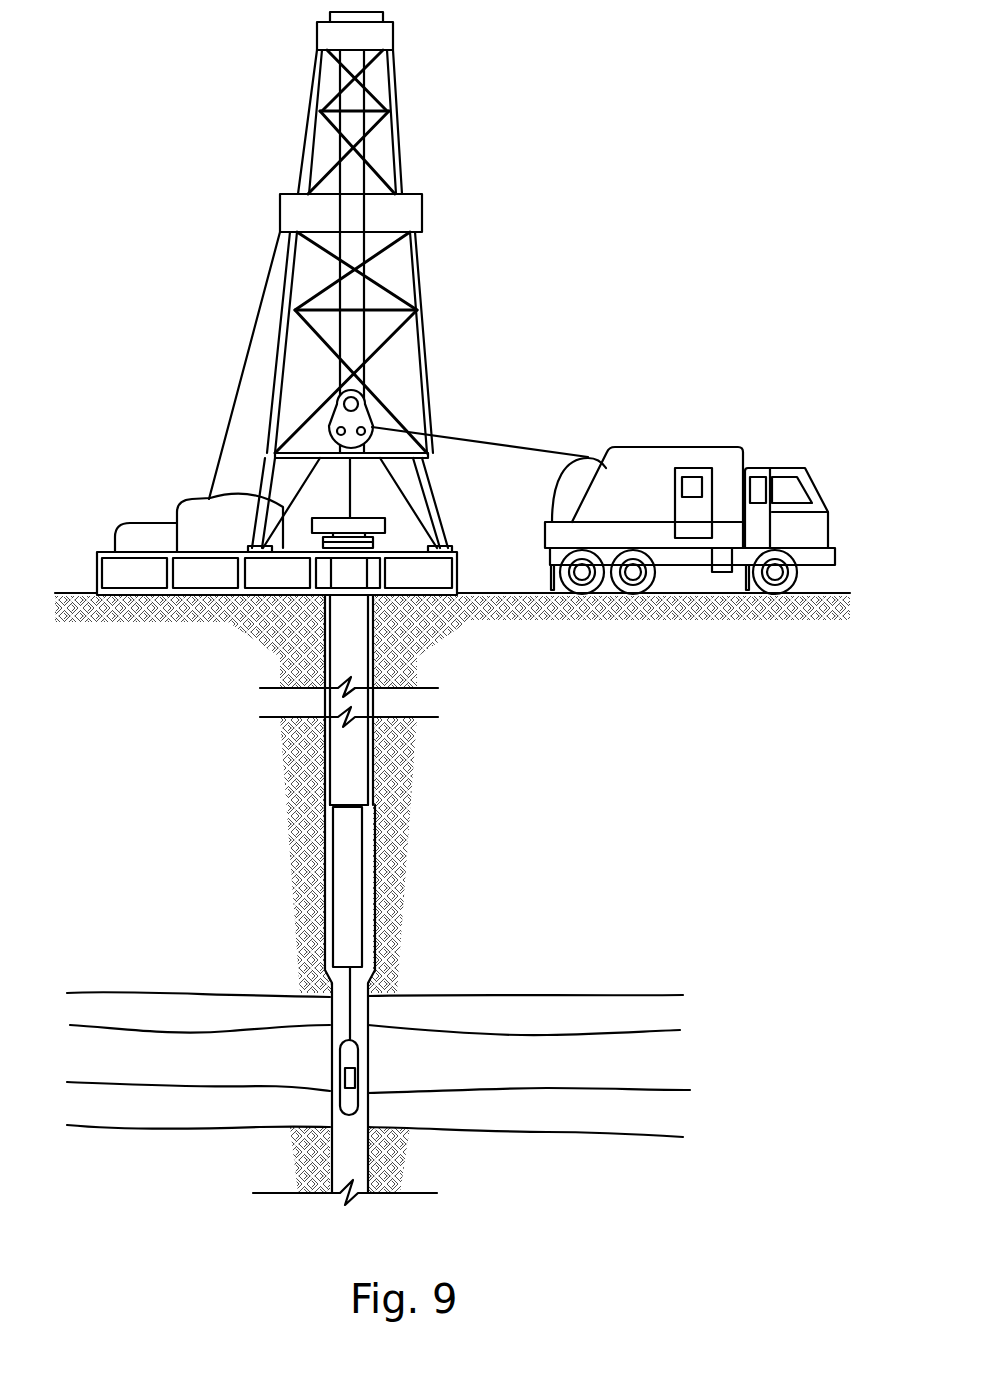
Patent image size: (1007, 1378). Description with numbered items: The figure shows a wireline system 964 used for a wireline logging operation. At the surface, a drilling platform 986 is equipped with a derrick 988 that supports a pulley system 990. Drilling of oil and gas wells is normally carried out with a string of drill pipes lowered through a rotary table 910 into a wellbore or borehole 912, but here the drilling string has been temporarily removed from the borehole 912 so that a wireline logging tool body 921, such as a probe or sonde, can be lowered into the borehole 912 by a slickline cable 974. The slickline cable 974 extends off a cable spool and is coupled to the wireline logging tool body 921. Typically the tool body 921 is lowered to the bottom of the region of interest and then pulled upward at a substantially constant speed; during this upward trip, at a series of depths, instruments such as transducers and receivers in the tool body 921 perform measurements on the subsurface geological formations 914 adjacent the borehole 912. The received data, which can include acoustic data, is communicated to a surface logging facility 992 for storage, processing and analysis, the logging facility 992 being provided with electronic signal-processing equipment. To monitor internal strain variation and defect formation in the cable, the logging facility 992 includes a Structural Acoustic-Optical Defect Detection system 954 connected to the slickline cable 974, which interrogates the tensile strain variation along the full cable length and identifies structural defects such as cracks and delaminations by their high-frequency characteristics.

The wireline system 964 is at (630, 137).
The pulley system 990 is at (352, 392).
The slickline cable 974 is at (477, 438).
The surface logging facility 992 is at (637, 447).
The Structural Acoustic-Optical Defect Detection (SADD) system 954 is at (675, 513).
The rotary table 910 is at (382, 517).
The derrick 988 is at (442, 537).
The drilling platform 986 is at (458, 577).
The borehole 912 is at (330, 1005).
The wireline logging tool body 921 is at (358, 1060).
The subsurface geological formations 914 is at (697, 987).